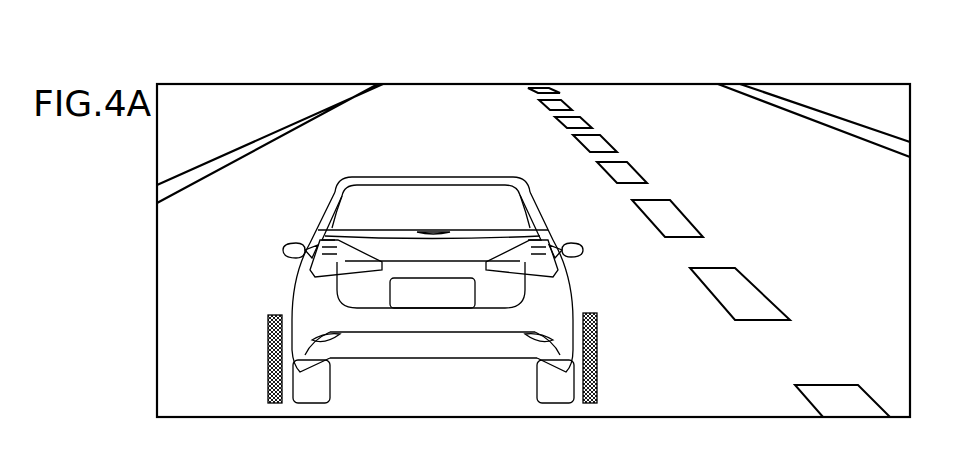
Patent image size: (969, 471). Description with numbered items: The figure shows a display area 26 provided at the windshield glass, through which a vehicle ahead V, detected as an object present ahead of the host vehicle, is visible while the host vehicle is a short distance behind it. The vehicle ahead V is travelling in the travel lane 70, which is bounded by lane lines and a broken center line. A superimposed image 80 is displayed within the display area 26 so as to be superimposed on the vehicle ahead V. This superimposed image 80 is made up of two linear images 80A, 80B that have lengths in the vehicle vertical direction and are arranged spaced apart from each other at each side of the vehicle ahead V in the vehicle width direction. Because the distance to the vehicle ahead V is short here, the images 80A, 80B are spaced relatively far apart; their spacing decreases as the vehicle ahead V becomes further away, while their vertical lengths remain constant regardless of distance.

The display area 26 is at (623, 84).
The travel lane 70 is at (452, 118).
The superimposed image 80 is at (627, 262).
The vehicle ahead V is at (365, 177).
The image 80A is at (267, 363).
The image 80B is at (598, 355).